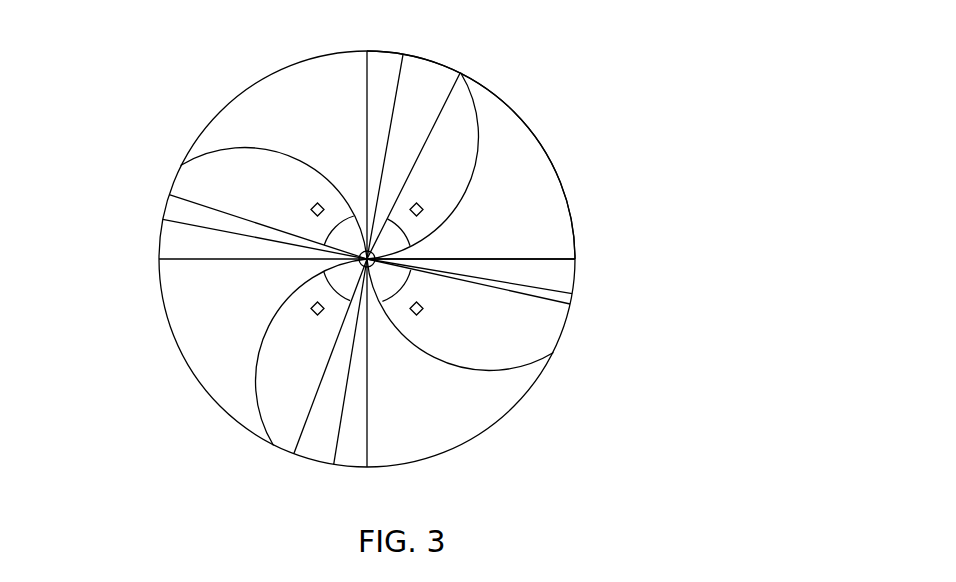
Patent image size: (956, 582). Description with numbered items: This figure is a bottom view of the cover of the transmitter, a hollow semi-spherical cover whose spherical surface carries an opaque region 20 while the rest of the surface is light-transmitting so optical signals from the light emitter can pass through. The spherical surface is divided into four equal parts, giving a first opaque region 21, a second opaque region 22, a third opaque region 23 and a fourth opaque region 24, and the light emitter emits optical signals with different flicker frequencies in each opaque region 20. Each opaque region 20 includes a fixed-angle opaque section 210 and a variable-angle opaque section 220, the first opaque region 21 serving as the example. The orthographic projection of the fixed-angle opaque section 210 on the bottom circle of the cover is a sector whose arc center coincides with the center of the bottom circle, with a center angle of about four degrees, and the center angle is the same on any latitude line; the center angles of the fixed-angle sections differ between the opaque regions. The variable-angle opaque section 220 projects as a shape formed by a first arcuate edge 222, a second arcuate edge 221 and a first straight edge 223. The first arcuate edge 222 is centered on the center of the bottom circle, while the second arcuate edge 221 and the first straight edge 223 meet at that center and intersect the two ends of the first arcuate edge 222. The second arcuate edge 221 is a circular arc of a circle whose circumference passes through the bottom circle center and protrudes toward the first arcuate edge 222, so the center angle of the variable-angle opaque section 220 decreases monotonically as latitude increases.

The opaque region 20 is at (446, 233).
The first opaque region 21 is at (571, 129).
The second opaque region 22 is at (452, 395).
The third opaque region 23 is at (312, 338).
The fourth opaque region 24 is at (297, 170).
The fixed-angle opaque section 210 is at (432, 92).
The variable-angle opaque section 220 is at (540, 152).
The second arcuate edge 221 is at (478, 117).
The first arcuate edge 222 is at (550, 157).
The first straight edge 223 is at (504, 220).